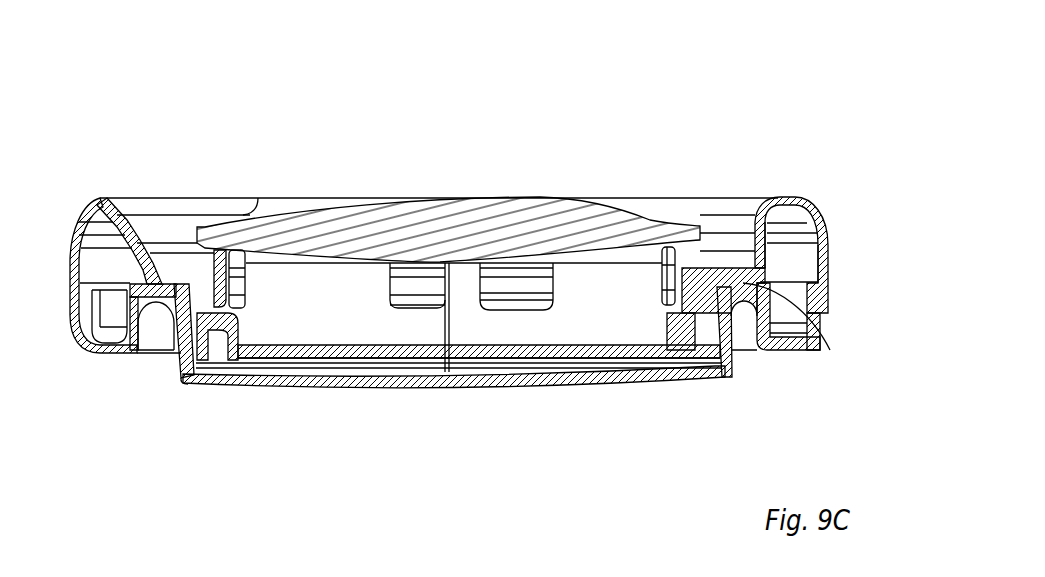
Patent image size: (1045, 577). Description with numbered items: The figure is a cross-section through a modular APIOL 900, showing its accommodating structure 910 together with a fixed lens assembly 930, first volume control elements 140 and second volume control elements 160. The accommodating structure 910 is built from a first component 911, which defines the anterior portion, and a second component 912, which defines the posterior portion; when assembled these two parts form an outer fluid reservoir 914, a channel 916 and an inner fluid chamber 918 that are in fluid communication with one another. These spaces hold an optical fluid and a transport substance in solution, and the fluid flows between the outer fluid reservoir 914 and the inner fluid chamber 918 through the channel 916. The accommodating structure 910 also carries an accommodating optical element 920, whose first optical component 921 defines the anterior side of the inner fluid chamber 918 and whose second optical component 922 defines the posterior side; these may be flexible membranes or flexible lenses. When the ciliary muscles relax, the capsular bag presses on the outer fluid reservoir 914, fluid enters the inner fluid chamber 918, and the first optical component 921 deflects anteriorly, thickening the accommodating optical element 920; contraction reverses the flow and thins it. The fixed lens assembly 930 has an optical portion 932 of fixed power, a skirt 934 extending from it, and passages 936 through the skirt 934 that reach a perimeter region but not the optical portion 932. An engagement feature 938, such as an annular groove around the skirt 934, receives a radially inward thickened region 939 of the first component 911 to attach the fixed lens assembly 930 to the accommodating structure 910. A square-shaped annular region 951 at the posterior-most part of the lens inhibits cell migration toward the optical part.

The modular APIOL 900 is at (163, 118).
The second volume control elements 160 is at (165, 280).
The channel 916 is at (192, 380).
The square-shaped annular region 951 is at (170, 393).
The thickened region 939 is at (204, 262).
The engagement feature 938 is at (678, 250).
The fixed lens assembly 930 is at (506, 214).
The optical portion 932 is at (405, 216).
The passages 936 is at (513, 292).
The first optical component 921 is at (620, 352).
The second optical component 922 is at (493, 390).
The inner fluid chamber 918 is at (570, 380).
The accommodating optical element 920 is at (428, 377).
The skirt 934 is at (242, 377).
The second component 912 is at (780, 353).
The accommodating structure 910 is at (831, 250).
The first component 911 is at (792, 198).
The outer fluid reservoir 914 is at (797, 255).
The first volume control elements 140 is at (817, 343).